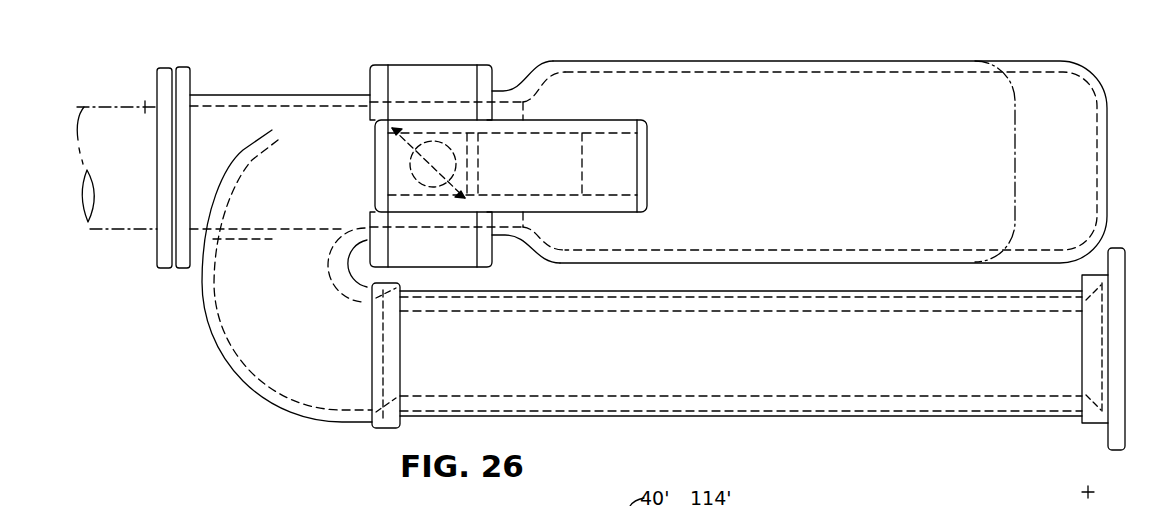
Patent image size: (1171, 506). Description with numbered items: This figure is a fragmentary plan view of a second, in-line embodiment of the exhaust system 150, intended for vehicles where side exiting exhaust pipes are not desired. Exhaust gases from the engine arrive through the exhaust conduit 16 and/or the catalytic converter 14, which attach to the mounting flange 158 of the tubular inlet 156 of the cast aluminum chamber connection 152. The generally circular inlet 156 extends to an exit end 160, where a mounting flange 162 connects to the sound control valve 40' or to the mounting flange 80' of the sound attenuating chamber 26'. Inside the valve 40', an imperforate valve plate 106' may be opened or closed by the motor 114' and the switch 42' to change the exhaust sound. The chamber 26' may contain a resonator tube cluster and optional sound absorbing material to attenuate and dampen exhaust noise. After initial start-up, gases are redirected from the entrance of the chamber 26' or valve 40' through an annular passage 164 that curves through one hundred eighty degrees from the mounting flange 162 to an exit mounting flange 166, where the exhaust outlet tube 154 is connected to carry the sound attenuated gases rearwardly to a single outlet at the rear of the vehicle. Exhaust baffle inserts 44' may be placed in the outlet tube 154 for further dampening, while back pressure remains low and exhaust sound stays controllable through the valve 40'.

The catalytic converter 14 is at (147, 103).
The exhaust conduit 16 is at (117, 149).
The mounting flange 158 is at (183, 84).
The tubular inlet 156 is at (218, 118).
The chamber connection 152 is at (251, 94).
The exit end 160 is at (363, 98).
The mounting flange 162 is at (378, 66).
The sound control valve 40' is at (446, 143).
The mounting flange 80' is at (527, 146).
The motor 114' is at (511, 144).
The sound attenuating chamber 26' is at (830, 146).
The exhaust system 150 is at (981, 30).
The imperforate valve plate 106' is at (428, 192).
The annular passage 164 is at (215, 324).
The exit mounting flange 166 is at (391, 428).
The exhaust outlet tube 154 is at (705, 418).
The exhaust baffle insert 44' is at (741, 375).
The switch 42' is at (1117, 372).